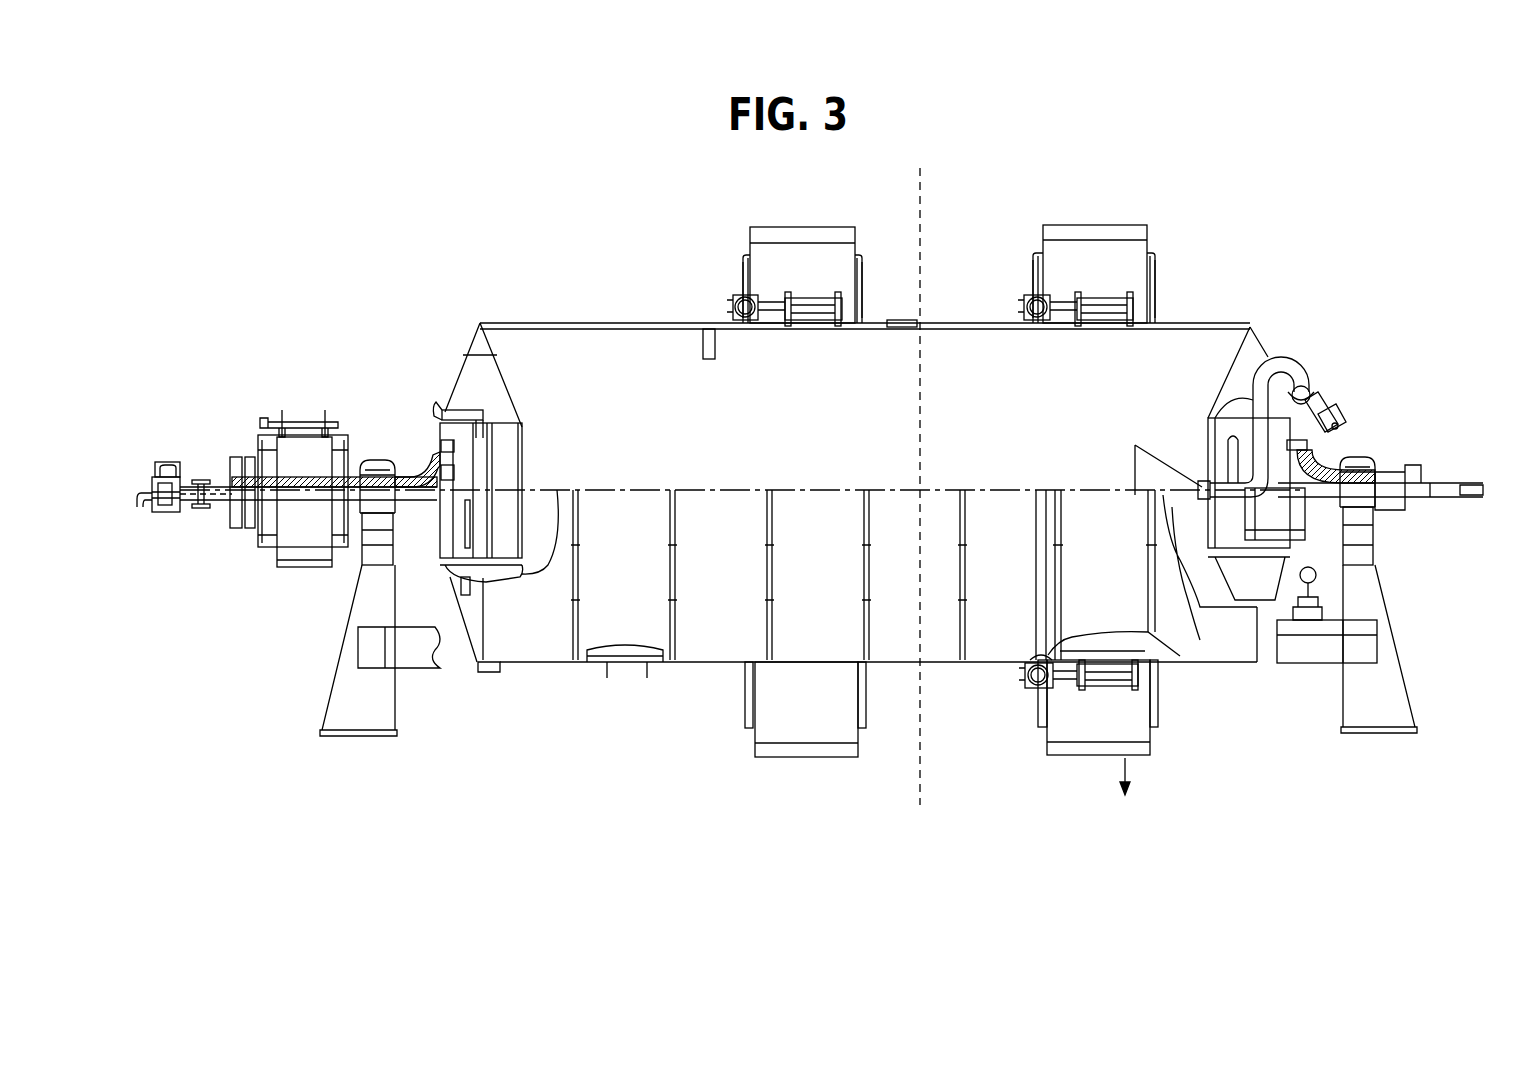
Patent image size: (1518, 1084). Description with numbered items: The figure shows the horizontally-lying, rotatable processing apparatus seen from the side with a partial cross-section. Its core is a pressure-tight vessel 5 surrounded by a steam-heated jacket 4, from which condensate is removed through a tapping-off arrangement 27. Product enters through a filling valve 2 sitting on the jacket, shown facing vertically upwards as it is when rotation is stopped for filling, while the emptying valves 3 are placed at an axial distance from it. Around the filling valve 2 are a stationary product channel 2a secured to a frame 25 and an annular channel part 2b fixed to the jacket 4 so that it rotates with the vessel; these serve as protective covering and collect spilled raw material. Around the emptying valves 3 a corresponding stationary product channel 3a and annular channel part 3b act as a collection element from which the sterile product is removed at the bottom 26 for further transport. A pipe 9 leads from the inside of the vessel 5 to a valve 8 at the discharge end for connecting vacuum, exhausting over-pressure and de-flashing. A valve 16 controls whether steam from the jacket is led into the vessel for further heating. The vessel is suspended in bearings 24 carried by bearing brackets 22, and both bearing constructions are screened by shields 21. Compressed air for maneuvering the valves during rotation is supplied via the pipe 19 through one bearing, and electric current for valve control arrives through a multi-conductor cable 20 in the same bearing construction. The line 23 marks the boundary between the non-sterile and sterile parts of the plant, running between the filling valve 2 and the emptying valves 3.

The filling valve 2 is at (805, 305).
The stationary product channel 2a is at (778, 232).
The annular channel part 2b is at (860, 282).
The emptying valve 3 is at (1098, 305).
The stationary product channel 3a is at (1095, 232).
The annular channel part 3b is at (1160, 282).
The steam-heated jacket 4 is at (560, 322).
The pressure-tight vessel 5 is at (668, 357).
The valve 8 is at (1318, 408).
The pipe 9 is at (1258, 412).
The valve 16 is at (1292, 630).
The pipe 19 is at (1385, 480).
The multi-conductor cable 20 is at (1240, 518).
The shields 21 is at (505, 392).
The bearing brackets 22 is at (357, 680).
The line 23 is at (927, 489).
The bearings 24 is at (377, 463).
The frame 25 is at (418, 655).
The bottom 26 is at (1143, 782).
The tapping-off arrangement 27 is at (505, 668).